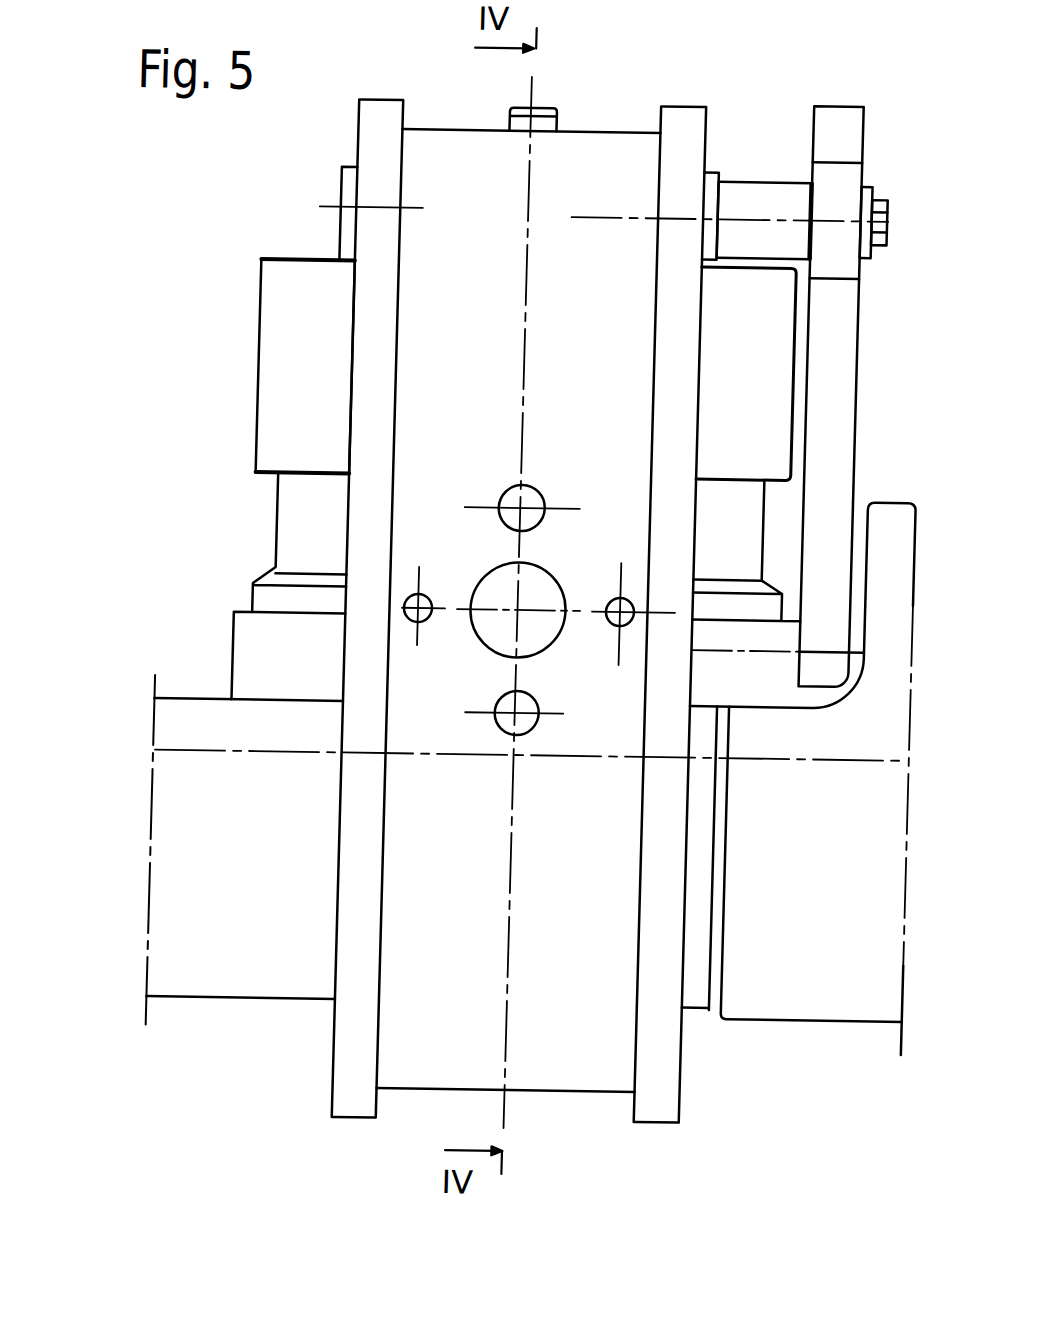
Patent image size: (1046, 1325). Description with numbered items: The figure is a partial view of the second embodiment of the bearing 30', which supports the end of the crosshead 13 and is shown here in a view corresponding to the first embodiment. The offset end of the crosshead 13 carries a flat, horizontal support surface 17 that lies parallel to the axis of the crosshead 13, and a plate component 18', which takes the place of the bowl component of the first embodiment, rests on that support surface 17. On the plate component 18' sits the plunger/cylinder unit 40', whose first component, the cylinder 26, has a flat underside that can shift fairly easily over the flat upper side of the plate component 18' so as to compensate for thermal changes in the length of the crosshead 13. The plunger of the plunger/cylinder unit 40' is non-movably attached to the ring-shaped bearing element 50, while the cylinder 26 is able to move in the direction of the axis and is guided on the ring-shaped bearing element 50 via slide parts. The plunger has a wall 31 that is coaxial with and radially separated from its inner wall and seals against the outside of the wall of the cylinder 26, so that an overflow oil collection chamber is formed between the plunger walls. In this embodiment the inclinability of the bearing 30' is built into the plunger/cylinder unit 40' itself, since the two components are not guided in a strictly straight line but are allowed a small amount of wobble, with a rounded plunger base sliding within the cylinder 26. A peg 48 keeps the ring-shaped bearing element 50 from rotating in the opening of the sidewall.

The bearing 30' is at (293, 607).
The peg 48 is at (543, 106).
The ring-shaped bearing element 50 is at (676, 102).
The wall 31 is at (252, 299).
The cylinder 26 is at (275, 510).
The plate component 18' is at (219, 630).
The support surface 17 is at (174, 702).
The plunger/cylinder unit 40' is at (422, 392).
The crosshead 13 is at (872, 742).